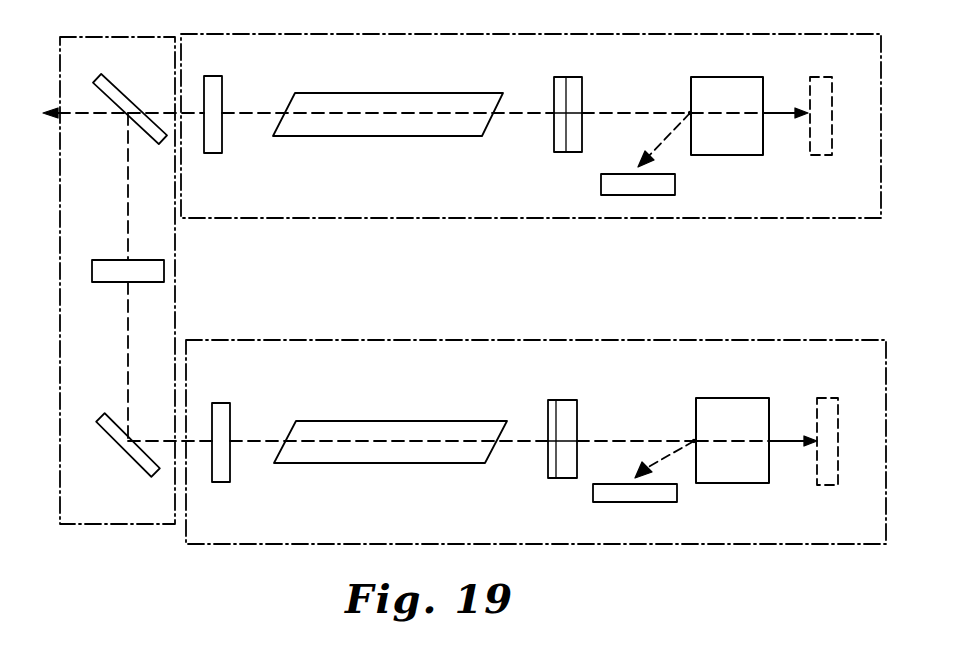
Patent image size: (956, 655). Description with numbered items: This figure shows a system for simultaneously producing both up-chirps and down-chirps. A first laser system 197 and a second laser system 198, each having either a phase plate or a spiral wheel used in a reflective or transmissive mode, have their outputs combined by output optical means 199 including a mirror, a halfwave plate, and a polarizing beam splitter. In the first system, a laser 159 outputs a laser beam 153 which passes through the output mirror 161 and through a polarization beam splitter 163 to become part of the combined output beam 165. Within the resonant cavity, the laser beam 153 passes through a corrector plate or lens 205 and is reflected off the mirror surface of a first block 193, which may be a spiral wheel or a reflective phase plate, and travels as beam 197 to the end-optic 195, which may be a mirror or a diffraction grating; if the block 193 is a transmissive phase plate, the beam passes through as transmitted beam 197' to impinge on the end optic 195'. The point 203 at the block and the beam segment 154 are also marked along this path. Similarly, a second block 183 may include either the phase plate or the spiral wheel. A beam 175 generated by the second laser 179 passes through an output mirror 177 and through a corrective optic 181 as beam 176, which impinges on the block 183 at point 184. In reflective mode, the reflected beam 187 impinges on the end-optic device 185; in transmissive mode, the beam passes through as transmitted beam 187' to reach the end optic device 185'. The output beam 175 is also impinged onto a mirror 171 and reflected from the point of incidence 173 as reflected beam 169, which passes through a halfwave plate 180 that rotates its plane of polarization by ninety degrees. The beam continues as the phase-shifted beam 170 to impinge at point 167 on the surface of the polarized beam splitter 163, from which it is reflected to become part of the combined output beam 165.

The combined output beam 165 is at (50, 110).
The polarization beam splitter 163 is at (125, 106).
The point of incidence on beam splitter 167 is at (124, 118).
The phase-shifted beam 170 is at (126, 208).
The laser beam 153 is at (172, 110).
The output mirror 161 is at (223, 90).
The laser 159 is at (424, 93).
The corrector plate or lens 205 is at (568, 64).
The beam splitting point 203 is at (690, 112).
The beam 154 is at (615, 114).
The first block 193 is at (705, 66).
The transmitted beam 197' is at (804, 100).
The end optic 195' is at (825, 178).
The end-optic 195 is at (602, 187).
The first laser system / reflected beam 197 is at (531, 155).
The second laser system 198 is at (533, 320).
The output optical means 199 is at (95, 540).
The halfwave plate 180 is at (110, 258).
The reflected beam 169 is at (128, 318).
The point of incidence 173 is at (134, 430).
The mirror 171 is at (114, 441).
The beam 175 is at (206, 432).
The output mirror 177 is at (232, 418).
The second laser 179 is at (398, 420).
The corrective optic 181 is at (561, 390).
The beam splitting point 184 is at (694, 440).
The beam 176 is at (612, 412).
The second block 183 is at (732, 390).
The end-optic device 185 is at (603, 508).
The reflected beam 187 is at (686, 486).
The transmitted beam 187' is at (790, 484).
The end optic device 185' is at (839, 465).